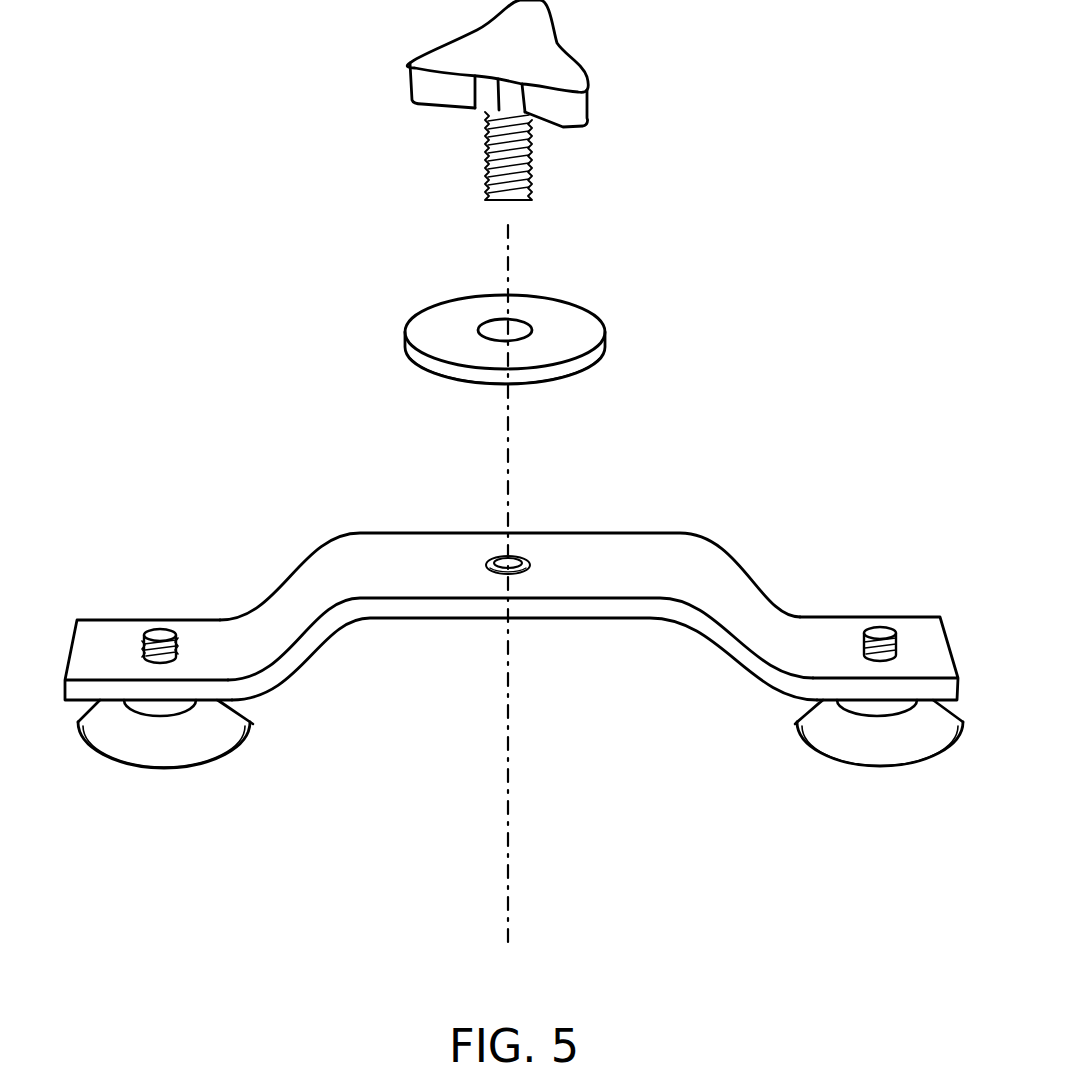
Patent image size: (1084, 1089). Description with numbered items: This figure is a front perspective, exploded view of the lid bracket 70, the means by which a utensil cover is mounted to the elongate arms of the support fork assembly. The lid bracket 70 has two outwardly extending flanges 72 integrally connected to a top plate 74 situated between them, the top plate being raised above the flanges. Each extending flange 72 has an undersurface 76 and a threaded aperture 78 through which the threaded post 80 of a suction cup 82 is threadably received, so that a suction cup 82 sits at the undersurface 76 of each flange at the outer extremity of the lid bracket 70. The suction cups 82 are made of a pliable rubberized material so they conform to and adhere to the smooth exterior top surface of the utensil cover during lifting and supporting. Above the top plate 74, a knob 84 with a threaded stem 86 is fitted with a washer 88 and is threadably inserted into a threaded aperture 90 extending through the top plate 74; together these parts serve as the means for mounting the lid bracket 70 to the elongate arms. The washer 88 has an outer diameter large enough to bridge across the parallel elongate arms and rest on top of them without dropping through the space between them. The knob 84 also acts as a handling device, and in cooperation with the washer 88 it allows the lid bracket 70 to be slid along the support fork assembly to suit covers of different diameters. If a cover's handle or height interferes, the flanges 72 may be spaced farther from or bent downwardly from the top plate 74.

The lid bracket 70 is at (328, 822).
The outwardly extending flanges 72 is at (137, 617).
The top plate 74 is at (597, 533).
The undersurface 76 is at (800, 723).
The threaded aperture 78 is at (143, 657).
The threaded post 80 is at (160, 633).
The suction cup 82 is at (140, 768).
The knob 84 is at (427, 103).
The threaded stem 86 is at (532, 168).
The washer 88 is at (585, 310).
The threaded aperture 90 is at (495, 555).